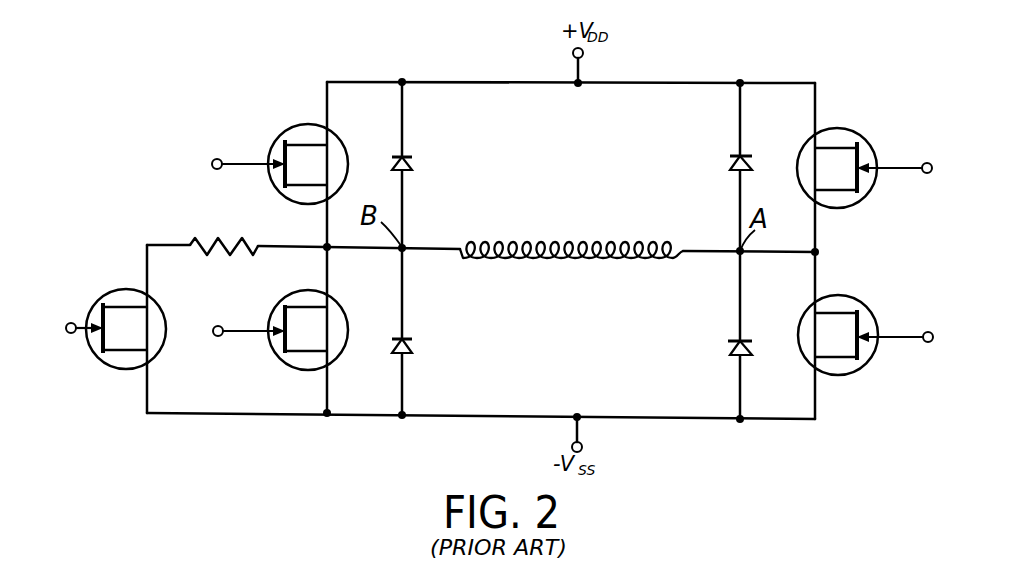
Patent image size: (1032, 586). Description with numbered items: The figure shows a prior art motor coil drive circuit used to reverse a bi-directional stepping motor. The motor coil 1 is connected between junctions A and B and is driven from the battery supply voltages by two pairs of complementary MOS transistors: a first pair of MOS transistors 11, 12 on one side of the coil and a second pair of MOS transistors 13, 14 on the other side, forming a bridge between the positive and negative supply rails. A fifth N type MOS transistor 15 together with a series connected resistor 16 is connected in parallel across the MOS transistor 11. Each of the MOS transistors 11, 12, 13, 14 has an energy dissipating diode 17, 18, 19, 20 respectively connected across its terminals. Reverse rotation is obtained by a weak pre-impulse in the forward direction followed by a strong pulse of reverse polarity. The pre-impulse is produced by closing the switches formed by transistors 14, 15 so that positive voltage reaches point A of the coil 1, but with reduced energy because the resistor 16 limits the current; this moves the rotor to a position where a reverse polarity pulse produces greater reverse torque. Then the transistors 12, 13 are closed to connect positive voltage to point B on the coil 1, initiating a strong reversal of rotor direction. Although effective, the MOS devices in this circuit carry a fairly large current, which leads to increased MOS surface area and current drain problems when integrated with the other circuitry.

The motor coil 1 is at (588, 247).
The MOS transistor 11 is at (283, 361).
The MOS transistor 12 is at (295, 126).
The MOS transistor 13 is at (866, 364).
The MOS transistor 14 is at (866, 140).
The N type MOS transistor 15 is at (113, 290).
The resistor 16 is at (212, 243).
The energy dissipating diode 17 is at (413, 343).
The energy dissipating diode 18 is at (413, 160).
The energy dissipating diode 19 is at (733, 345).
The energy dissipating diode 20 is at (733, 157).